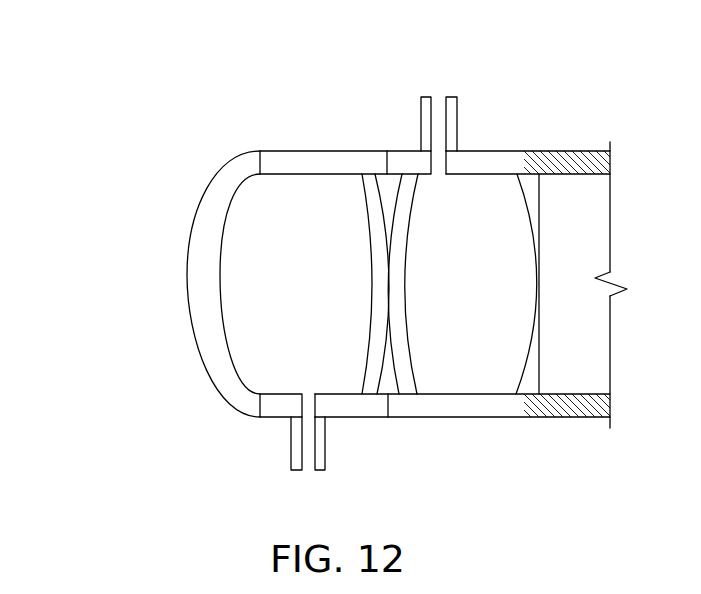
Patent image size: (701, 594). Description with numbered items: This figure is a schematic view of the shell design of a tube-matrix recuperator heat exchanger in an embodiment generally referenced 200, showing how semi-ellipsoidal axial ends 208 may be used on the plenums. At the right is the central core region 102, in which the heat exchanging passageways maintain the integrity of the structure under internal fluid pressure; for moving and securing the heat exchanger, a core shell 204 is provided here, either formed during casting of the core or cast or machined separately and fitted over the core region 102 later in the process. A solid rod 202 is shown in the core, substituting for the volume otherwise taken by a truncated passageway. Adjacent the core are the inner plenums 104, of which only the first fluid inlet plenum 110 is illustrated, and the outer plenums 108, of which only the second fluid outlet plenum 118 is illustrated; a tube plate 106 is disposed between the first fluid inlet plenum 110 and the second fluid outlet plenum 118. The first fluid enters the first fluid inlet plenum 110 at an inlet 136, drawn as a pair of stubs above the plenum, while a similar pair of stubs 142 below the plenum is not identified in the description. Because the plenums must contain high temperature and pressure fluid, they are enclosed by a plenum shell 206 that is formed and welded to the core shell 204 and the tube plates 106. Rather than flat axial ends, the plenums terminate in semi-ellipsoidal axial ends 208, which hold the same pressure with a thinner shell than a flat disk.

The heat exchanger embodiment 200 is at (158, 108).
The outer plenum regions 108 is at (397, 140).
The second fluid outlet plenum 118 is at (289, 200).
The inner plenum regions 104 is at (435, 439).
The first fluid inlet plenum 110 is at (458, 418).
The inlet 136 is at (420, 118).
The alignment pins 142 is at (291, 443).
The tube plate 106 is at (370, 182).
The plenum shell 206 is at (490, 150).
The core shell 204 is at (540, 150).
The central core region 102 is at (590, 200).
The solid rod 202 is at (583, 420).
The semi-ellipsoidal axial ends 208 is at (197, 213).